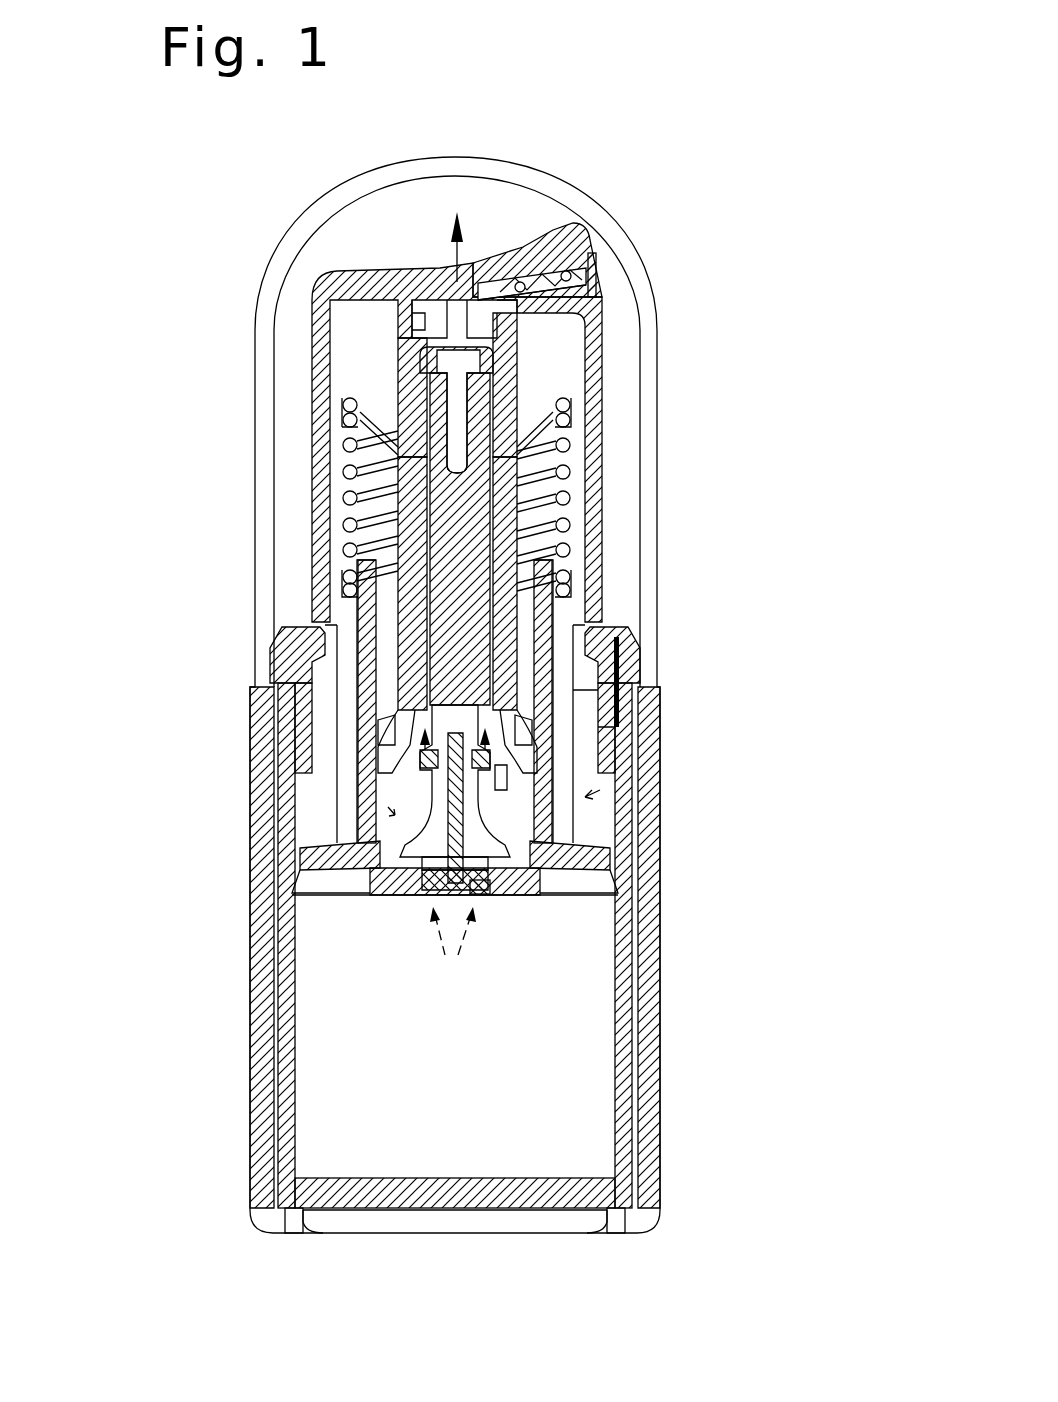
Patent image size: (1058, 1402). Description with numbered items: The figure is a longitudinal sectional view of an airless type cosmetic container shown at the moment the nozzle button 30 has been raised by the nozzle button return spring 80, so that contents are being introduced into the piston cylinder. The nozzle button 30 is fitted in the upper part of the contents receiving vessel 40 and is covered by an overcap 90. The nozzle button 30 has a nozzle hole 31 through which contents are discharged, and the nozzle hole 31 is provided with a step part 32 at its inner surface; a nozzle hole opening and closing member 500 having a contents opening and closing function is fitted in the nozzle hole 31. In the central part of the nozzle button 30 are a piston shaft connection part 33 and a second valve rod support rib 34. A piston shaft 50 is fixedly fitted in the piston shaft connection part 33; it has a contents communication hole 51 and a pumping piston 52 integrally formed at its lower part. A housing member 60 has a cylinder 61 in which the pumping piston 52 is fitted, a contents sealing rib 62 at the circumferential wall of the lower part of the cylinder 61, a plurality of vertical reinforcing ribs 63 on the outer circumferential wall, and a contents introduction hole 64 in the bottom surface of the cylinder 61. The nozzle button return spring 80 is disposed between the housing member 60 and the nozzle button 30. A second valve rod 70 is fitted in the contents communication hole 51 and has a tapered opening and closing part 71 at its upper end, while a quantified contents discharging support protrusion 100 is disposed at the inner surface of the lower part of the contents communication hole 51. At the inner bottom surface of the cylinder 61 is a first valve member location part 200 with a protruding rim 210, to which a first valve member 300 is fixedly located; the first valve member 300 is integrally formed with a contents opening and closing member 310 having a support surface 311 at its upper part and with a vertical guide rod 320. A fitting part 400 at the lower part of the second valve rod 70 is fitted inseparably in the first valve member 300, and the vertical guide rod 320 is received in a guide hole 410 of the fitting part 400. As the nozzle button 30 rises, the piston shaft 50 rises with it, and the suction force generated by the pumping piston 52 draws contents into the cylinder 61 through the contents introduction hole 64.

The nozzle button 30 is at (322, 352).
The nozzle hole 31 is at (588, 285).
The step part 32 is at (507, 320).
The piston shaft connection part 33 is at (405, 368).
The second valve rod support rib 34 is at (420, 318).
The contents receiving vessel 40 is at (270, 930).
The piston shaft 50 is at (405, 582).
The contents communication hole 51 is at (385, 515).
The pumping piston 52 is at (405, 748).
The housing member 60 is at (578, 792).
The cylinder 61 is at (555, 692).
The contents sealing rib 62 is at (572, 876).
The vertical reinforcing ribs 63 is at (590, 655).
The contents introduction hole 64 is at (500, 890).
The second valve rod 70 is at (470, 512).
The tapered opening and closing part 71 is at (500, 385).
The nozzle button return spring 80 is at (545, 518).
The overcap 90 is at (268, 298).
The quantified contents discharging support protrusion 100 is at (600, 790).
The first valve member location part 200 is at (510, 882).
The protruding rim 210 is at (500, 768).
The first valve member 300 is at (380, 810).
The contents opening and closing member 310 is at (460, 890).
The support surface 311 is at (440, 880).
The vertical guide rod 320 is at (400, 850).
The fitting part 400 is at (430, 745).
The guide hole 410 is at (388, 807).
The nozzle hole opening and closing member 500 is at (600, 262).